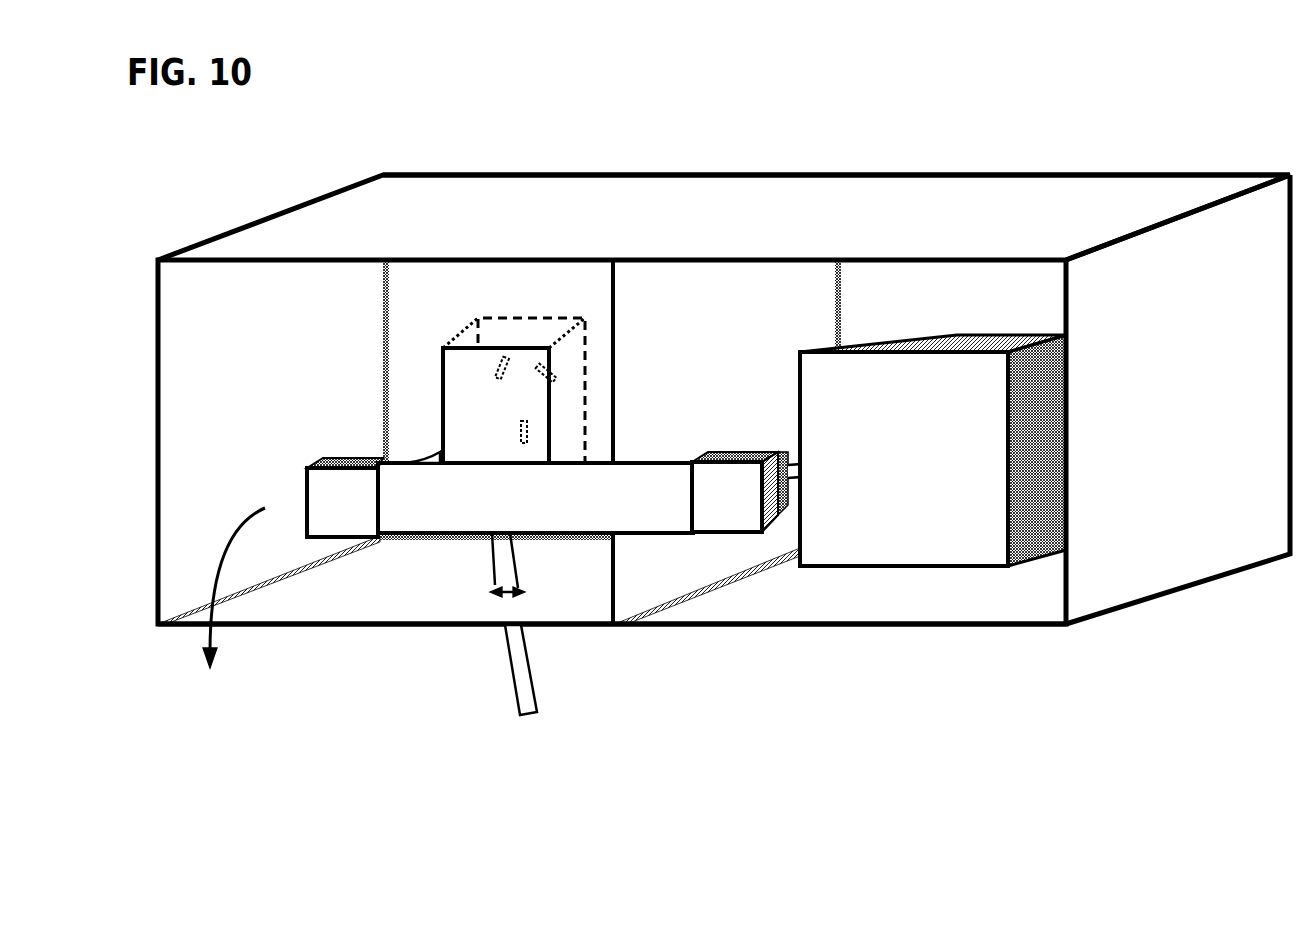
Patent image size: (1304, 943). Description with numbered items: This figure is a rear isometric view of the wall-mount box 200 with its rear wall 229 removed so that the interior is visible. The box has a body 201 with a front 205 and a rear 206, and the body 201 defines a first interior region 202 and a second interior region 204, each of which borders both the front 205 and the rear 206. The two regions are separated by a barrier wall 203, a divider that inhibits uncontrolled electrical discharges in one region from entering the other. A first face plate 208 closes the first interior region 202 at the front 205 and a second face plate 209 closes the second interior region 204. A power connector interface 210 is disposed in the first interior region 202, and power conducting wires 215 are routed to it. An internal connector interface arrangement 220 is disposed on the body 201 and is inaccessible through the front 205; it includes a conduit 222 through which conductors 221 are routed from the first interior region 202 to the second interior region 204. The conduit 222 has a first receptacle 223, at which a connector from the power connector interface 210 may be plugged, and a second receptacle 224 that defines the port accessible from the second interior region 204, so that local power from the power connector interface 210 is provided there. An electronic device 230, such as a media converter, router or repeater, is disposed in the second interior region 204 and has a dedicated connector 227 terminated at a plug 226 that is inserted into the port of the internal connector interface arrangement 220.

The wall-mount box 200 is at (999, 155).
The body 201 is at (745, 174).
The first interior region 202 is at (367, 575).
The barrier wall 203 is at (733, 350).
The second interior region 204 is at (755, 597).
The front 205 is at (1174, 161).
The rear 206 is at (790, 653).
The first face plate 208 is at (407, 304).
The second face plate 209 is at (874, 304).
The power connector interface 210 is at (432, 382).
The power conducting wires 215 is at (510, 652).
The internal connector interface arrangement 220 is at (542, 450).
The conductors 221 is at (418, 456).
The conduit 222 is at (515, 512).
The first receptacle 223 is at (322, 517).
The second receptacle 224 is at (707, 512).
The plug 226 is at (771, 450).
The dedicated connector 227 is at (828, 477).
The rear wall 229 is at (227, 604).
The electronic device 230 is at (928, 567).